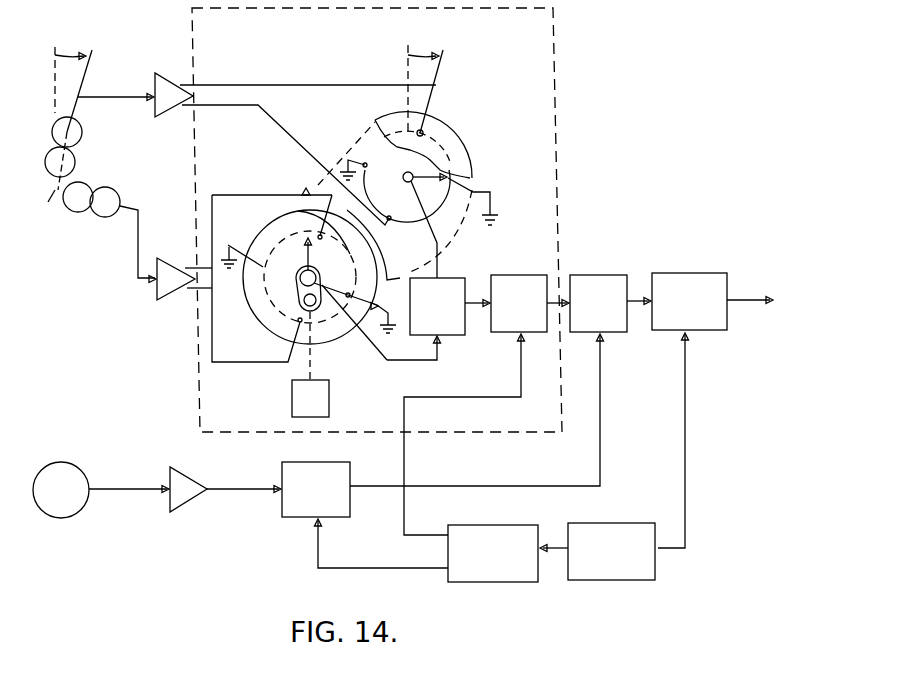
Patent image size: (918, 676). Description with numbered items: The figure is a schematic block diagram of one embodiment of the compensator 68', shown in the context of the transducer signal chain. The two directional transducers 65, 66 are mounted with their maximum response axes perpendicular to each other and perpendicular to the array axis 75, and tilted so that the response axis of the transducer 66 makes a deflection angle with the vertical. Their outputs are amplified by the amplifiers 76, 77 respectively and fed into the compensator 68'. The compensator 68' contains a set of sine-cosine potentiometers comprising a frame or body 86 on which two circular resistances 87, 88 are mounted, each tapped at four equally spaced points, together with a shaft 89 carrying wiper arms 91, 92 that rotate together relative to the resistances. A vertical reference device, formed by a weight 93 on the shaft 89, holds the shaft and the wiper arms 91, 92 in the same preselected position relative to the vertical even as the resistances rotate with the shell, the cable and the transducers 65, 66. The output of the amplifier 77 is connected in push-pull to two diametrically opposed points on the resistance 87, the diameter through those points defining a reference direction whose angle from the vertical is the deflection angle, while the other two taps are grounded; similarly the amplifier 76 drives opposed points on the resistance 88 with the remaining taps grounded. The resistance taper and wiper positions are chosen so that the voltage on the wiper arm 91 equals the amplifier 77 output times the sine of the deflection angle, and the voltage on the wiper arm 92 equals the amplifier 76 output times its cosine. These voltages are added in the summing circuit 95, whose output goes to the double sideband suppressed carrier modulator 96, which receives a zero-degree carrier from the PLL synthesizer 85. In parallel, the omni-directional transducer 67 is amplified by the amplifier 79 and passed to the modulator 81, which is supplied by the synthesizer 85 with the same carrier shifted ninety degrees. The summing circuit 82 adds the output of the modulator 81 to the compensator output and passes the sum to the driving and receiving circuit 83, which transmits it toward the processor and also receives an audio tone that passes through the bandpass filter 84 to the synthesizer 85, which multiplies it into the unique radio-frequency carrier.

The transducer 65 is at (108, 191).
The transducer 66 is at (82, 128).
The omni-directional transducer 67 is at (76, 465).
The compensator 68' is at (393, 220).
The array axis 75 is at (57, 125).
The amplifier 76 is at (180, 254).
The amplifier 77 is at (183, 72).
The amplifier 79 is at (187, 472).
The modulator 81 is at (333, 461).
The summing circuit 82 is at (598, 276).
The driving and receiving circuit 83 is at (686, 274).
The bandpass filter 84 is at (618, 523).
The phase-locked loop synthesizer 85 is at (506, 524).
The frame or body 86 is at (458, 141).
The circular resistance 87 is at (371, 151).
The circular resistance 88 is at (270, 257).
The shaft 89 is at (406, 223).
The wiper arm 91 is at (436, 183).
The wiper arm 92 is at (321, 229).
The weight 93 is at (330, 403).
The summing circuit 95 is at (445, 277).
The double sideband suppressed carrier modulator 96 is at (515, 276).